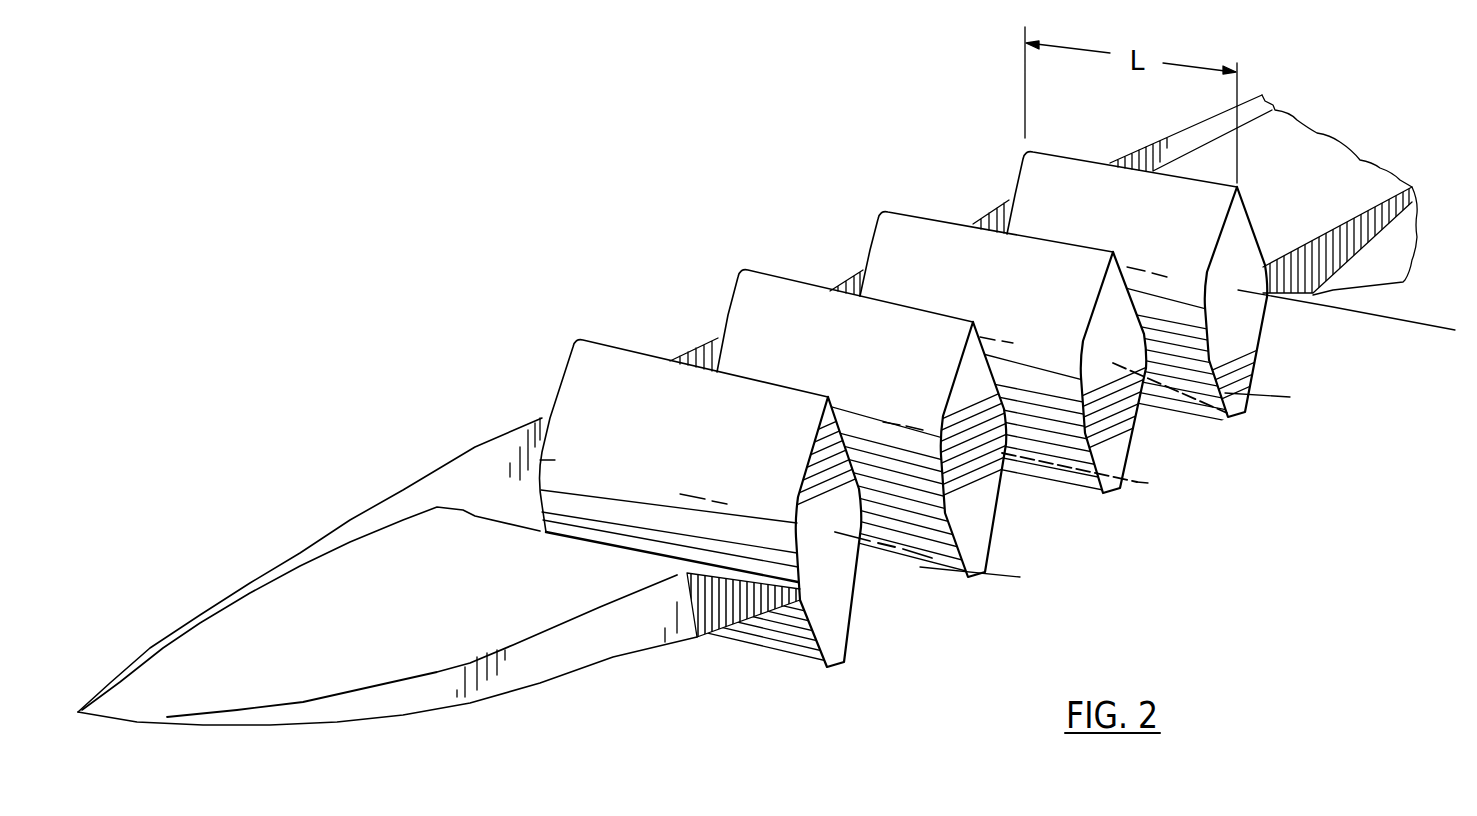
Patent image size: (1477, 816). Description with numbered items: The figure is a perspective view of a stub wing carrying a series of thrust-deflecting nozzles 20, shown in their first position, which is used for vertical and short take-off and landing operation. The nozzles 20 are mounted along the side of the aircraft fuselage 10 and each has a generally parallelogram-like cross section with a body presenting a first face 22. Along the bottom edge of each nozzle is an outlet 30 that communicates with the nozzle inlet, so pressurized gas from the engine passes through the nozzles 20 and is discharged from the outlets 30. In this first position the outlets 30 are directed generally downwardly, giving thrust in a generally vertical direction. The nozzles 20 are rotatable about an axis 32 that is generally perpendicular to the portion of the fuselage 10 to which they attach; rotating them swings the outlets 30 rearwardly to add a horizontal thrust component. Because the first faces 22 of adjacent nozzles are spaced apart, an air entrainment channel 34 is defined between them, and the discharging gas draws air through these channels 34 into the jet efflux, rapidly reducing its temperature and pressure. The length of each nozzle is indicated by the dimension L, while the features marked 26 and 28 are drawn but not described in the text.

The aircraft fuselage 10 is at (460, 468).
The nozzles 20 is at (842, 700).
The first face 22 is at (647, 435).
The curved face 26 is at (284, 663).
The leading edge of tooth 28 is at (558, 388).
The outlet 30 is at (843, 662).
The axis 32 is at (932, 558).
The air entrainment channel 34 is at (634, 337).